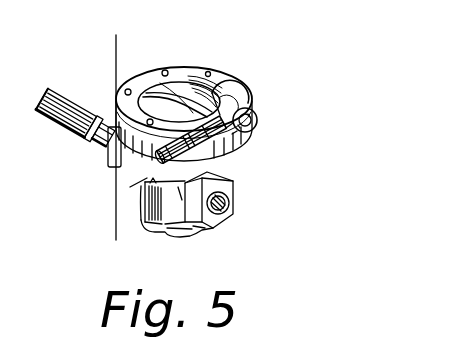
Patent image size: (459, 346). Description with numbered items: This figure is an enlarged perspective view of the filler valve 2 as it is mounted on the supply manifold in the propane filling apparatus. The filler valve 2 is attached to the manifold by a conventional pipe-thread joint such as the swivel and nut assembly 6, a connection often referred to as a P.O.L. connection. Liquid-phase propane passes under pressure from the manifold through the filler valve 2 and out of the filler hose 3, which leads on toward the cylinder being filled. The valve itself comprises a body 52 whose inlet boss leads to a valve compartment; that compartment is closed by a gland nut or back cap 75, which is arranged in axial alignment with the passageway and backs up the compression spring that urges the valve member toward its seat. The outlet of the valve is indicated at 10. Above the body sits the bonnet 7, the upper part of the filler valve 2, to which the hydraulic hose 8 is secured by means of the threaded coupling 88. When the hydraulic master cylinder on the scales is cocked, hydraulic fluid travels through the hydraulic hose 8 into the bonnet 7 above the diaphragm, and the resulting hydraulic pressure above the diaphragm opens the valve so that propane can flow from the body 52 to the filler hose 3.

The filler valve 2 is at (237, 203).
The filler hose 3 is at (56, 150).
The swivel and nut assembly 6 is at (93, 21).
The bonnet 7 is at (188, 77).
The hydraulic hose 8 is at (200, 162).
The outlet 10 is at (135, 165).
The body 52 is at (236, 183).
The gland nut or back cap 75 is at (203, 233).
The threaded coupling 88 is at (252, 100).